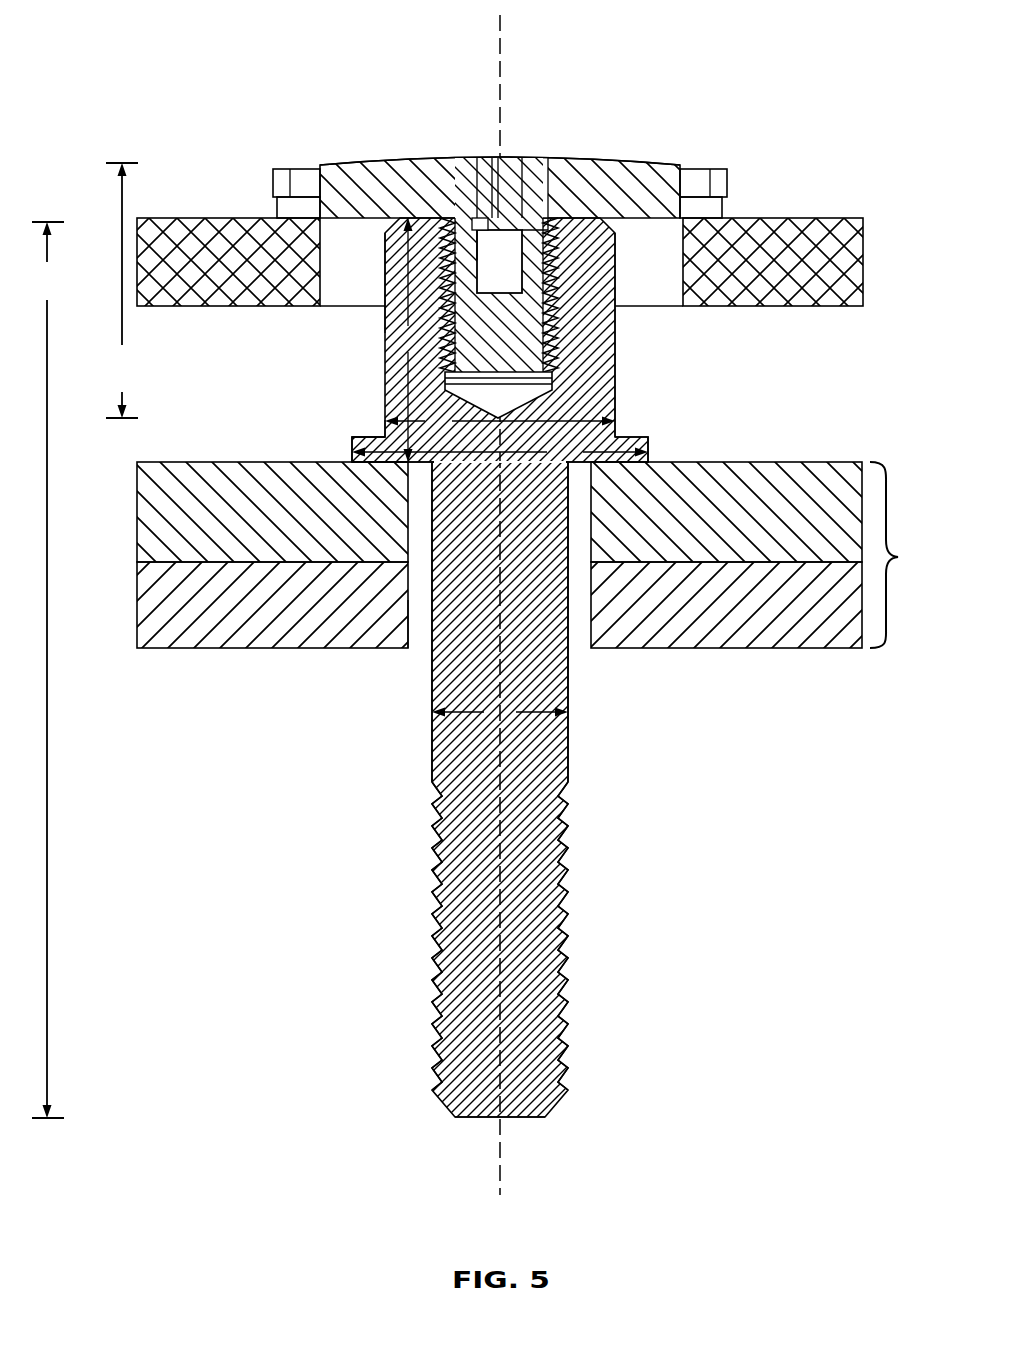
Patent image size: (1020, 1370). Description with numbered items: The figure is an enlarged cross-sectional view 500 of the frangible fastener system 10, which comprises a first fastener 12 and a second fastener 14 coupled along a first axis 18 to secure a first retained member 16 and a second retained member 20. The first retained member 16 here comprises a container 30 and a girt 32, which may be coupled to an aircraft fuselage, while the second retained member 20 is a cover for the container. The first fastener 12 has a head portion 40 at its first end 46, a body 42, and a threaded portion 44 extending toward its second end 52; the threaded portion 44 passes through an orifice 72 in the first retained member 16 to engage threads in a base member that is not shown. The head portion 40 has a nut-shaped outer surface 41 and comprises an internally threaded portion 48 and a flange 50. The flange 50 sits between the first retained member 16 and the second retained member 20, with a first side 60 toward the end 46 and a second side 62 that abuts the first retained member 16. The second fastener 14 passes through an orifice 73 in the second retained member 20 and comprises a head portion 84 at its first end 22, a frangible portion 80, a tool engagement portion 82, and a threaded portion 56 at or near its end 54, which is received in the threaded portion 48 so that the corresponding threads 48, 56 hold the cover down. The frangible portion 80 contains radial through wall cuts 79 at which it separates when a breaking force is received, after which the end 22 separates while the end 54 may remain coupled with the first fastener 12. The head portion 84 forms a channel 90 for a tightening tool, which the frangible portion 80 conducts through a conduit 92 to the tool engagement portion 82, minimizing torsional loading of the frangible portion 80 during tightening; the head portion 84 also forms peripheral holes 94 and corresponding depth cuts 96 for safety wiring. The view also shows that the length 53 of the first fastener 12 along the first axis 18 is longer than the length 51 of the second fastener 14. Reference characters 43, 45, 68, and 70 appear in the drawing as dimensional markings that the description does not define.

The frangible fastener system 10 is at (795, 1002).
The first fastener 12 is at (432, 760).
The second fastener 14 is at (650, 163).
The first retained member 16 is at (895, 555).
The first axis 18 is at (503, 1158).
The second retained member 20 is at (863, 218).
The first end of second fastener 22 is at (488, 148).
The container 30 is at (137, 600).
The girt 32 is at (137, 500).
The head portion 40 is at (385, 371).
The outer surface of head portion 41 is at (385, 334).
The body 42 is at (568, 744).
The nut height 43 is at (406, 340).
The threaded portion 44 is at (570, 960).
The nut width 45 is at (500, 421).
The first end of first fastener 46 is at (581, 263).
The threaded portion 48 is at (545, 330).
The flange 50 is at (352, 456).
The length of second fastener 51 is at (122, 290).
The second end of first fastener 52 is at (480, 1120).
The length of first fastener 53 is at (48, 670).
The end of second fastener 54 is at (616, 412).
The threaded portion 56 is at (560, 376).
The first side of flange 60 is at (368, 434).
The second side of flange 62 is at (371, 464).
The flange width 68 is at (500, 452).
The shank diameter 70 is at (500, 712).
The orifice 72 is at (410, 652).
The orifice 73 is at (661, 280).
The through wall cuts 79 is at (471, 217).
The frangible portion 80 is at (538, 228).
The tool engagement portion 82 is at (490, 258).
The head portion 84 is at (350, 164).
The channel 90 is at (513, 228).
The conduit 92 is at (520, 218).
The peripheral holes 94 is at (298, 167).
The depth cuts 96 is at (277, 208).
The cross-sectional view 500 is at (155, 1002).